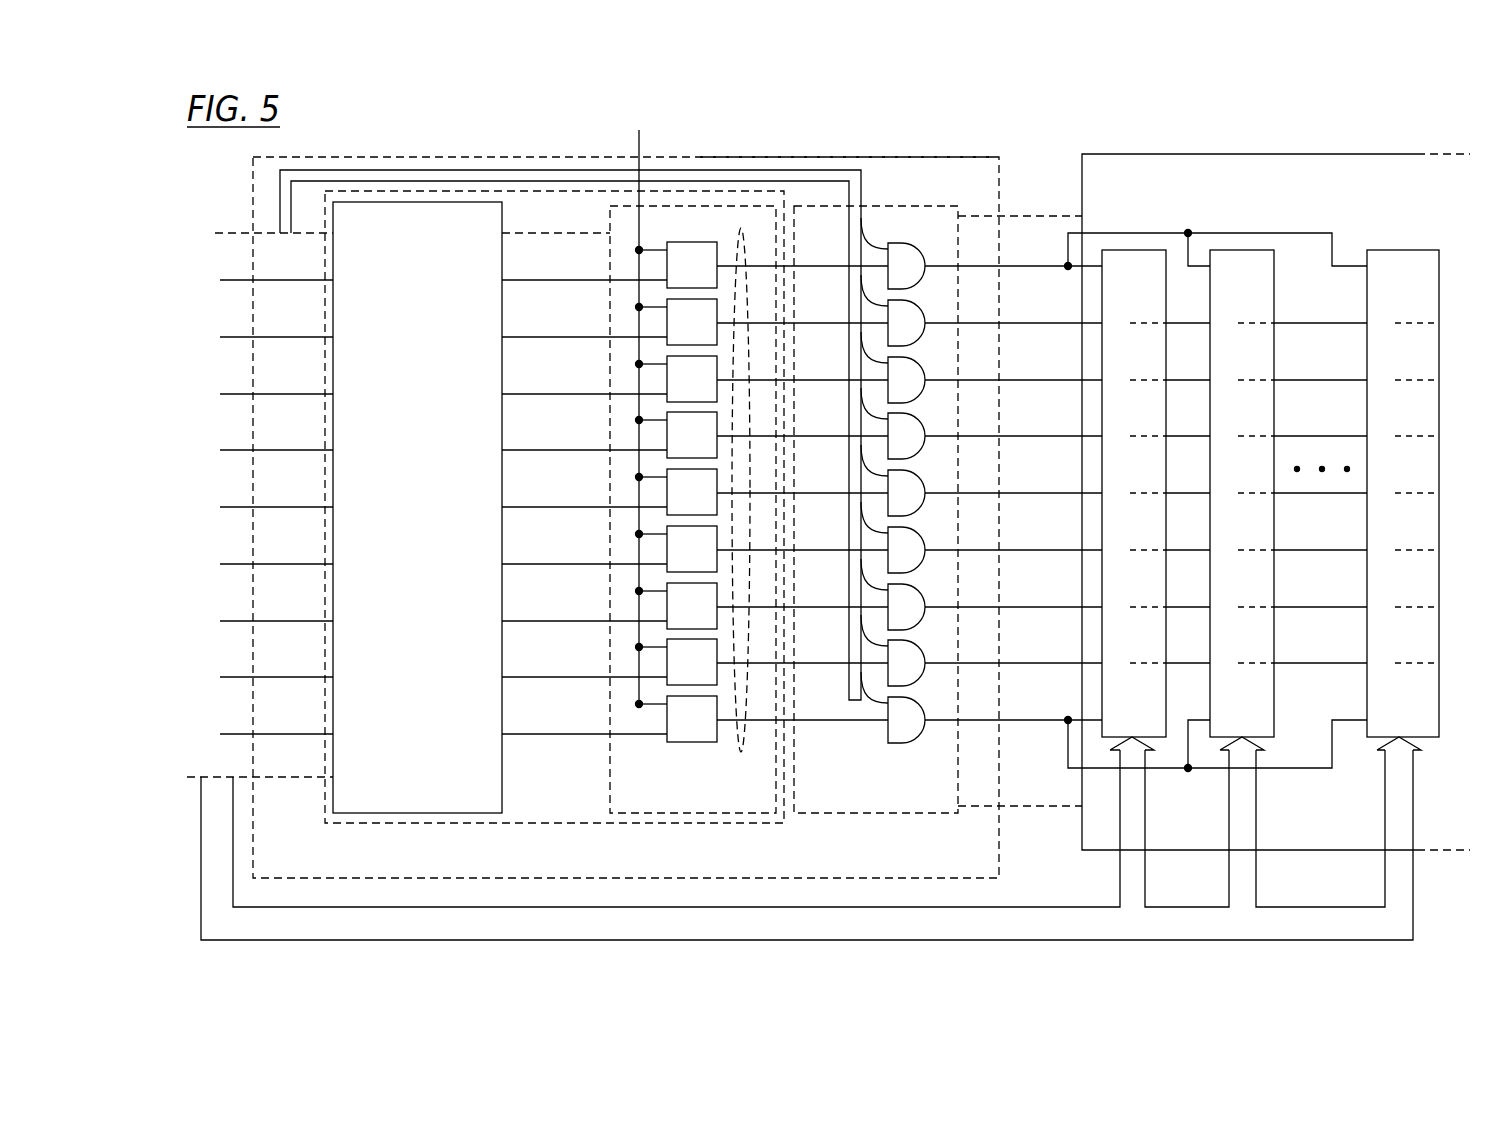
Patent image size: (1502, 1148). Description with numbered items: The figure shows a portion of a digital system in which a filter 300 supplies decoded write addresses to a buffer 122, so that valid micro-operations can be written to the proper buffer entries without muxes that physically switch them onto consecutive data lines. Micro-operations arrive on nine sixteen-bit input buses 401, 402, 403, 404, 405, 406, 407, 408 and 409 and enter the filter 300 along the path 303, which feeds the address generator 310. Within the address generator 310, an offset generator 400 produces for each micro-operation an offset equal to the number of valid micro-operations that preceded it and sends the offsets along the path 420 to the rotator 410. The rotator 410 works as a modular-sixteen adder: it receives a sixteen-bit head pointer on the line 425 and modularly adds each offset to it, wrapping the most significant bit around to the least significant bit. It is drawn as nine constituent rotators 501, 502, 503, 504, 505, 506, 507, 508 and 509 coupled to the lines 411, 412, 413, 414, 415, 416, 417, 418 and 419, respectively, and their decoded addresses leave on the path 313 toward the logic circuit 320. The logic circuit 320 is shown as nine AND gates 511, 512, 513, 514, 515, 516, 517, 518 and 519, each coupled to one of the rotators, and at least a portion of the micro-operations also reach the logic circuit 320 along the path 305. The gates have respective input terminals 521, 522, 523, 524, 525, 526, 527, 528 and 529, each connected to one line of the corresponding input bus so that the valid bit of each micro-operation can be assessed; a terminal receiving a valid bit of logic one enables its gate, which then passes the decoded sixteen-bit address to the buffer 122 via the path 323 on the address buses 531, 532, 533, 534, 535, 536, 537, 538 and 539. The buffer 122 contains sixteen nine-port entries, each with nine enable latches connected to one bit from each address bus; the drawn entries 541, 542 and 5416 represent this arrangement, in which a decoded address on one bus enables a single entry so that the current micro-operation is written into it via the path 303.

The buffer 122 is at (1378, 848).
The filter 300 is at (991, 875).
The path 303 is at (288, 788).
The path 305 is at (828, 160).
The address generator 310 is at (571, 815).
The path 313 is at (734, 225).
The logic circuit 320 is at (948, 806).
The path 323 is at (1055, 208).
The offset generator 400 is at (491, 802).
The input line 401 is at (242, 280).
The input line 402 is at (242, 337).
The input line 403 is at (242, 394).
The input line 404 is at (242, 450).
The input line 405 is at (242, 507).
The input line 406 is at (242, 564).
The input line 407 is at (242, 621).
The input line 408 is at (242, 677).
The input line 409 is at (242, 734).
The rotator 410 is at (765, 806).
The line 411 is at (572, 280).
The line 412 is at (572, 337).
The line 413 is at (572, 394).
The line 414 is at (572, 450).
The line 415 is at (572, 507).
The line 416 is at (572, 564).
The line 417 is at (572, 621).
The line 418 is at (572, 677).
The line 419 is at (572, 734).
The path 420 is at (572, 231).
The line 425 is at (640, 148).
The constituent rotator 501 is at (676, 284).
The constituent rotator 502 is at (676, 341).
The constituent rotator 503 is at (676, 398).
The constituent rotator 504 is at (676, 454).
The constituent rotator 505 is at (676, 511).
The constituent rotator 506 is at (676, 568).
The constituent rotator 507 is at (676, 625).
The constituent rotator 508 is at (676, 681).
The constituent rotator 509 is at (676, 738).
The AND gate 511 is at (910, 252).
The AND gate 512 is at (910, 309).
The AND gate 513 is at (910, 366).
The AND gate 514 is at (910, 422).
The AND gate 515 is at (910, 479).
The AND gate 516 is at (910, 536).
The AND gate 517 is at (910, 593).
The AND gate 518 is at (910, 649).
The AND gate 519 is at (910, 706).
The input terminal 521 is at (888, 249).
The input terminal 522 is at (888, 306).
The input terminal 523 is at (888, 363).
The input terminal 524 is at (888, 419).
The input terminal 525 is at (888, 476).
The input terminal 526 is at (888, 533).
The input terminal 527 is at (888, 590).
The input terminal 528 is at (888, 646).
The input terminal 529 is at (888, 703).
The address bus 531 is at (1058, 265).
The address bus 532 is at (1058, 322).
The address bus 533 is at (1058, 379).
The address bus 534 is at (1058, 435).
The address bus 535 is at (1058, 492).
The address bus 536 is at (1058, 549).
The address bus 537 is at (1058, 606).
The address bus 538 is at (1058, 662).
The address bus 539 is at (1058, 719).
The buffer entry 541 is at (1163, 729).
The buffer entry 542 is at (1271, 729).
The buffer entry 5416 is at (1434, 729).